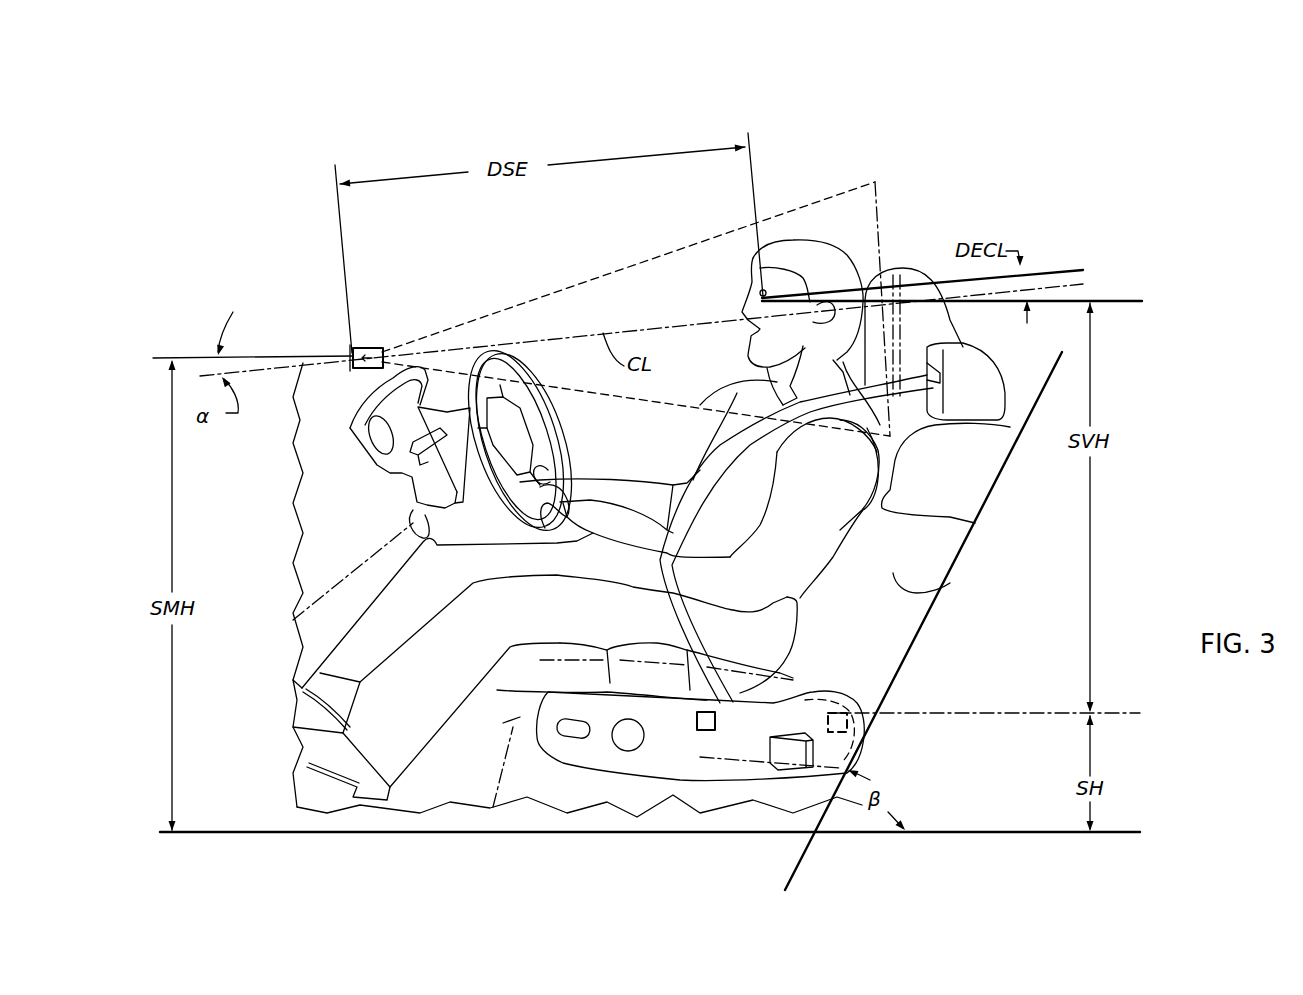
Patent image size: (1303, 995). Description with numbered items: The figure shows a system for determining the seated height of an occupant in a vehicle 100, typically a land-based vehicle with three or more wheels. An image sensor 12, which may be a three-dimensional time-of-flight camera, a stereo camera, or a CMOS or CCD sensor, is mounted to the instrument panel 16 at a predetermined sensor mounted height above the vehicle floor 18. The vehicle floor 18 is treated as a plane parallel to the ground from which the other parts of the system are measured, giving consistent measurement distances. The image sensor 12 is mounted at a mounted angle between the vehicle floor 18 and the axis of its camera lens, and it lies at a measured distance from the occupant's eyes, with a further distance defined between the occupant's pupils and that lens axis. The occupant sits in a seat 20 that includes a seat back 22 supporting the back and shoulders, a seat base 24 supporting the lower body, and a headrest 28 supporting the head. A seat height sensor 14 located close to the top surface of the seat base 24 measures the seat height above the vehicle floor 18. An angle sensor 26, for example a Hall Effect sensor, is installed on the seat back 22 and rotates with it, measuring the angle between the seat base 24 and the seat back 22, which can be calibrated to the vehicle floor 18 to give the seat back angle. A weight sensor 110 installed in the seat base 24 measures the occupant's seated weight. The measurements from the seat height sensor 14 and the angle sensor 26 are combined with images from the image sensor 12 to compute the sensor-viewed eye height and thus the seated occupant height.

The vehicle 100 is at (163, 206).
The image sensor 12 is at (363, 347).
The seat height sensor 14 is at (863, 727).
The instrument panel 16 is at (332, 400).
The vehicle floor 18 is at (222, 835).
The seat 20 is at (972, 550).
The seat back 22 is at (940, 591).
The seat base 24 is at (597, 750).
The angle sensor 26 is at (790, 750).
The headrest 28 is at (905, 278).
The weight sensor 110 is at (708, 731).